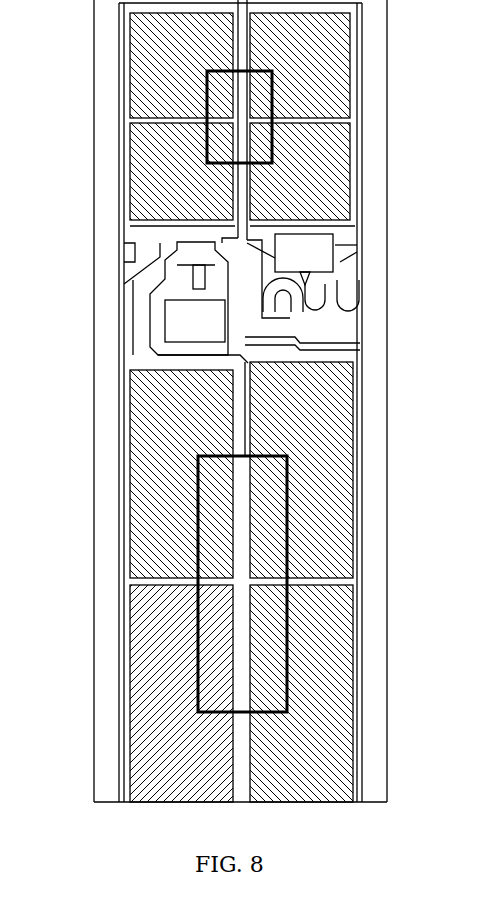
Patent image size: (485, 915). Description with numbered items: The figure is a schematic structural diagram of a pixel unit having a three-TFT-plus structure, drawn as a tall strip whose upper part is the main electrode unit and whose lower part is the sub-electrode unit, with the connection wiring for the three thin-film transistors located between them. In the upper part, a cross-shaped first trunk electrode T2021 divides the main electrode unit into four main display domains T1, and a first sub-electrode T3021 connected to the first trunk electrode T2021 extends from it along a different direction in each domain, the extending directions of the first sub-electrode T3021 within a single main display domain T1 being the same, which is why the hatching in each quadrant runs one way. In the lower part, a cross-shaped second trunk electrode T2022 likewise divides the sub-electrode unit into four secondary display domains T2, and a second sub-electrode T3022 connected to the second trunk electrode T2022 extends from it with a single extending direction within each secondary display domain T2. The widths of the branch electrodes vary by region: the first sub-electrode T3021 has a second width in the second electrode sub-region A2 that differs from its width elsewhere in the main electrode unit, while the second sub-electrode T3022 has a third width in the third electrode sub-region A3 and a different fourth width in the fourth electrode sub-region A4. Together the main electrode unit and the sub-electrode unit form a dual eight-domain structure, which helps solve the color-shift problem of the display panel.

The main display domain T1 is at (242, 457).
The secondary display domain T2 is at (242, 457).
The first sub-electrode T3021 is at (160, 115).
The first trunk electrode T2021 is at (150, 120).
The second sub-electrode T3022 is at (242, 457).
The second trunk electrode T2022 is at (242, 457).
The second electrode sub-region A2 is at (345, 105).
The third electrode sub-region A3 is at (353, 493).
The fourth electrode sub-region A4 is at (352, 582).